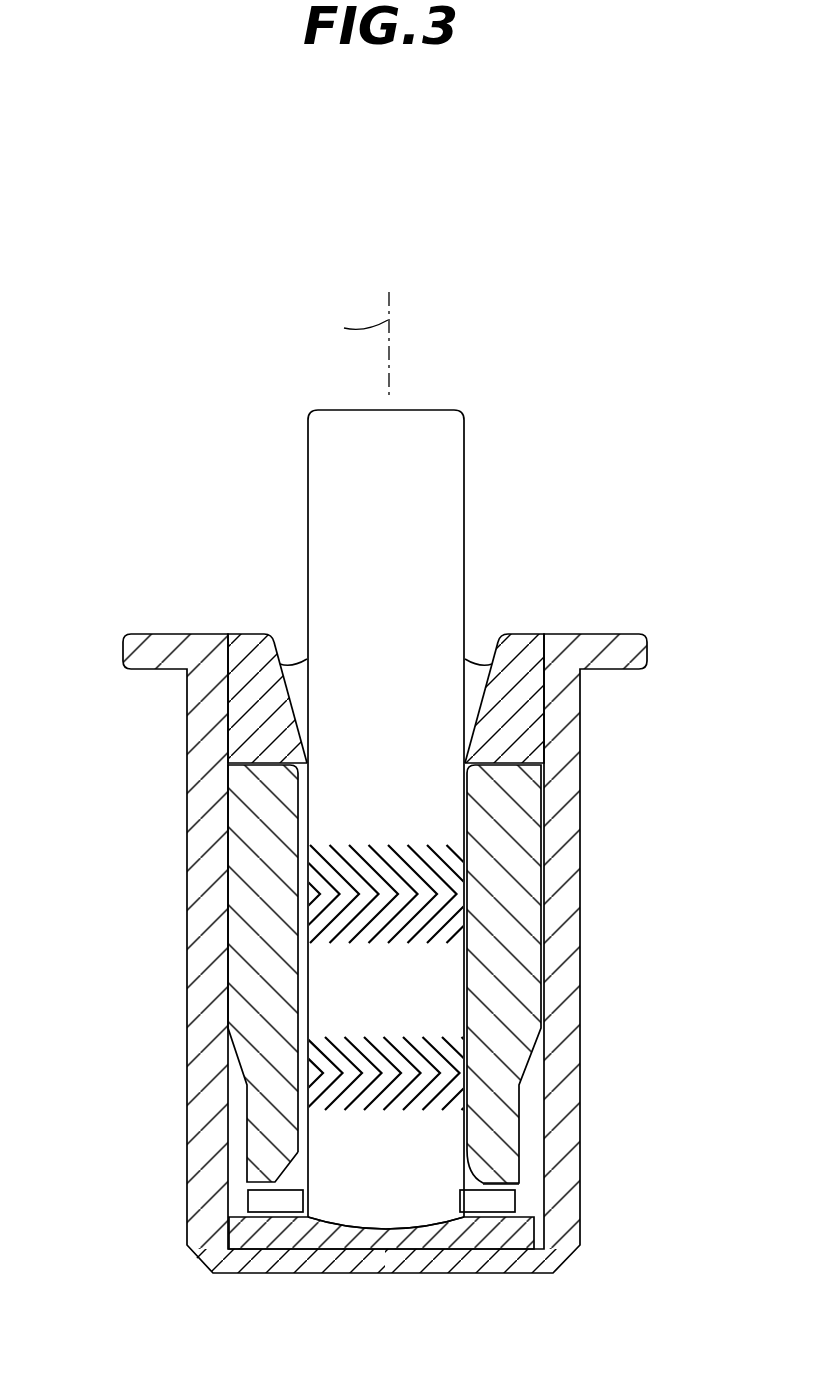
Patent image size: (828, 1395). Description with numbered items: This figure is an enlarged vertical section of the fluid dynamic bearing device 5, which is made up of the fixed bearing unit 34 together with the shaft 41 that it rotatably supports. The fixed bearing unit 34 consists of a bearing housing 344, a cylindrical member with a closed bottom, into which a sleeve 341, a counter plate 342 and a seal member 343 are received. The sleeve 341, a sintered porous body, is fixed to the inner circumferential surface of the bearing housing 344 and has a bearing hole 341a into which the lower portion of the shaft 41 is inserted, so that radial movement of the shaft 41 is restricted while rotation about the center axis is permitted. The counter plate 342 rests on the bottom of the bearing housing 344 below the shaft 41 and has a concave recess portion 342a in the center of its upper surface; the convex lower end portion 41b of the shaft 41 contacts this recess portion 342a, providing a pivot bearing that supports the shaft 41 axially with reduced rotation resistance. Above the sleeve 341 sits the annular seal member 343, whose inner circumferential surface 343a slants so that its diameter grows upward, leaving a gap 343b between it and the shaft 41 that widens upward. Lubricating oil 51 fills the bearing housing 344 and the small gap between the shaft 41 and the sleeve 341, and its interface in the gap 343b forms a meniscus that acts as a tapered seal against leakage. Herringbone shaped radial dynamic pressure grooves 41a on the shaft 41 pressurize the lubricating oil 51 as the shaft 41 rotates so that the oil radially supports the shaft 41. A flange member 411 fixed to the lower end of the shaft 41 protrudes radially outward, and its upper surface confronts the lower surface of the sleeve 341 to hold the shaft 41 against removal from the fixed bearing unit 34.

The fluid dynamic bearing device 5 is at (90, 372).
The fixed bearing unit 34 is at (166, 1082).
The bearing housing 344 is at (560, 1033).
The seal member 343 is at (517, 648).
The inner circumferential surface 343a is at (302, 693).
The gap 343b is at (296, 652).
The sleeve 341 is at (522, 838).
The bearing hole 341a is at (304, 813).
The counter plate 342 is at (463, 1235).
The recess portion 342a is at (388, 1223).
The lubricating oil 51 is at (523, 1183).
The shaft 41 is at (448, 497).
The radial dynamic pressure grooves 41a is at (430, 949).
The lower end portion 41b is at (357, 1230).
The flange member 411 is at (275, 1200).